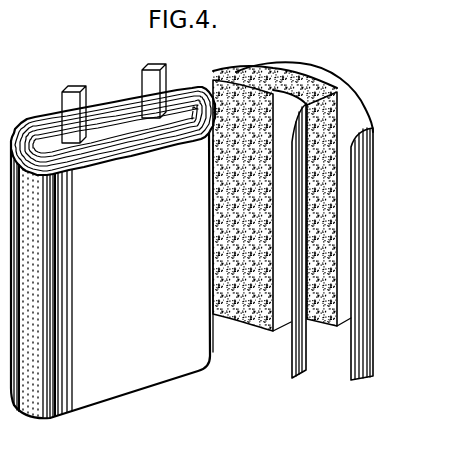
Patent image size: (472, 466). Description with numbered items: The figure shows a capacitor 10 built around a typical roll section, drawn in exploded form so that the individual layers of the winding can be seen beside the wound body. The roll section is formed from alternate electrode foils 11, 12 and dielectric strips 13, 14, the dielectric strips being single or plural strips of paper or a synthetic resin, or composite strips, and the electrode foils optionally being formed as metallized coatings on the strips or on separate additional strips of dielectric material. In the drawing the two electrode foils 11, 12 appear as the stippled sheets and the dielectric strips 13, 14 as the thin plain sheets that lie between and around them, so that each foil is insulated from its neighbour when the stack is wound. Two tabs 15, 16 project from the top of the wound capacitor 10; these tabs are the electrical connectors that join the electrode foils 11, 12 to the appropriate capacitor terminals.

The capacitor 10 is at (108, 87).
The electrode foil 11 is at (255, 313).
The electrode foil 12 is at (323, 313).
The dielectric strip 13 is at (301, 356).
The dielectric strip 14 is at (366, 351).
The tab 15 is at (60, 99).
The tab 16 is at (157, 78).